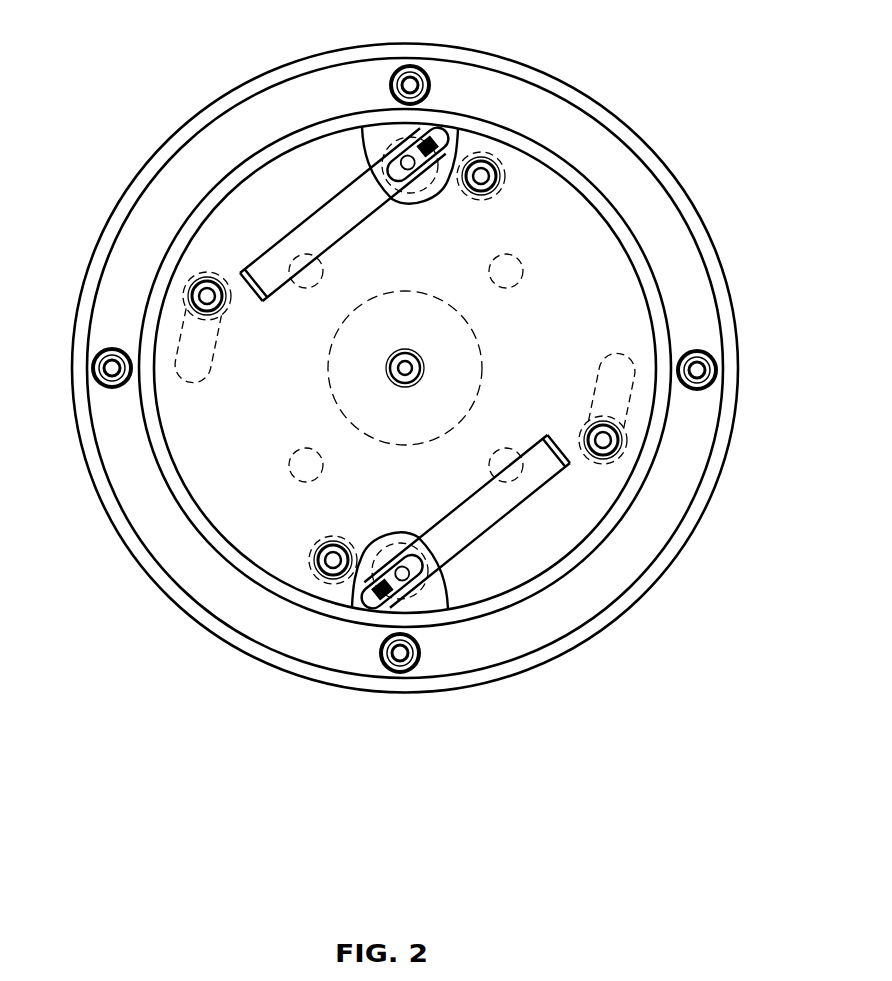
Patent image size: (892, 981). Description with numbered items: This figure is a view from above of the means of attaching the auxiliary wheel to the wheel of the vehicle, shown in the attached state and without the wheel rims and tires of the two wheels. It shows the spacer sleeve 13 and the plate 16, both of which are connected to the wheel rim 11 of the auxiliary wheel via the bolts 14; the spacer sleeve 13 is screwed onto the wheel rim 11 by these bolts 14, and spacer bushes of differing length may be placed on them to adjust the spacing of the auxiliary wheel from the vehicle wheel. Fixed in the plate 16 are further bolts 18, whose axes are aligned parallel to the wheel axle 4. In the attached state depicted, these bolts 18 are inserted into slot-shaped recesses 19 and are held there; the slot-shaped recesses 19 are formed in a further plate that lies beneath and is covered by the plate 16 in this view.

The wheel axle 4 is at (392, 376).
The wheel rim 11 is at (192, 128).
The spacer sleeve 13 is at (602, 195).
The bolts 14 is at (427, 70).
The plate 16 is at (607, 258).
The bolts 18 is at (500, 163).
The slot-shaped recesses 19 is at (470, 145).